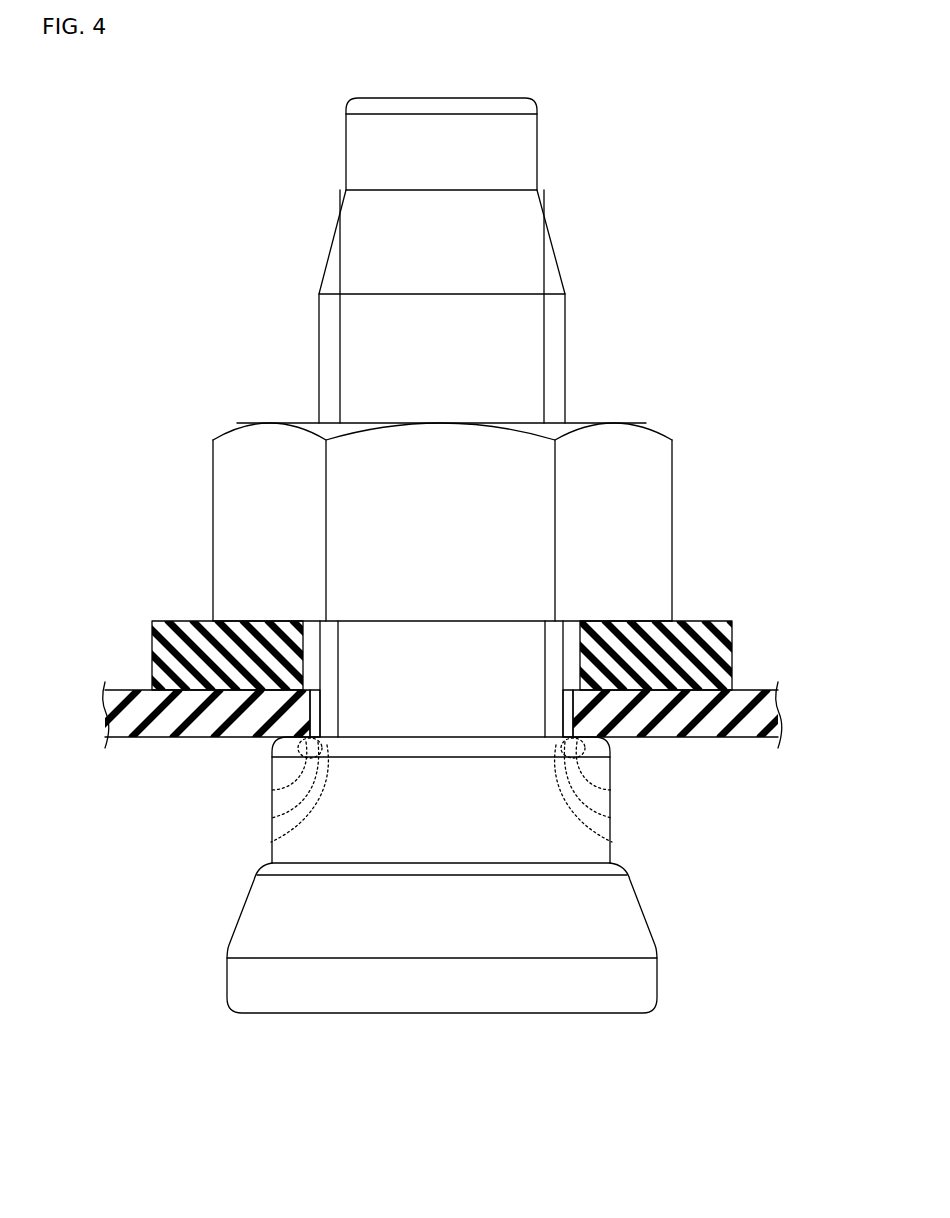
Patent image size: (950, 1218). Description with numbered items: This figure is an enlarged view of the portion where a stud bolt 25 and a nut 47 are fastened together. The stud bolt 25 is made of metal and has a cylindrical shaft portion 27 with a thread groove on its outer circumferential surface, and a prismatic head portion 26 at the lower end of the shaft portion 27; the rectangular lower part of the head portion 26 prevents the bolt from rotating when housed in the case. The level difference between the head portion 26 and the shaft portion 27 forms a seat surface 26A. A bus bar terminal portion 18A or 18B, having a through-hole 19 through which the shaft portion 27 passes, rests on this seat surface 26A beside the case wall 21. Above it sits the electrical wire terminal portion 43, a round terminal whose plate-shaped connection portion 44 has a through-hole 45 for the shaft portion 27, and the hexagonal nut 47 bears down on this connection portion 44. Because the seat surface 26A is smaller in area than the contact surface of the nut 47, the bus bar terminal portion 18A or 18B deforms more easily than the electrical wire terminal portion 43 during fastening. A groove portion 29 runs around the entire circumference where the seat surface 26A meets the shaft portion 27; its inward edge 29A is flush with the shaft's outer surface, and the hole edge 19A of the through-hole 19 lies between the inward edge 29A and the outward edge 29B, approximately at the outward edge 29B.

The bus bar terminal portion 18A is at (746, 704).
The bus bar terminal portion 18B is at (693, 660).
The through-hole 19 is at (312, 714).
The hole edge 19A is at (311, 708).
The case wall 21 is at (131, 724).
The stud bolt 25 is at (775, 336).
The head portion 26 is at (524, 770).
The seat surface 26A is at (491, 737).
The shaft portion 27 is at (528, 248).
The groove portion 29 is at (612, 816).
The inward edge 29A is at (612, 842).
The outward edge 29B is at (612, 788).
The electrical wire terminal portion 43 is at (227, 624).
The connection portion 44 is at (158, 662).
The through-hole 45 is at (316, 650).
The nut 47 is at (288, 447).